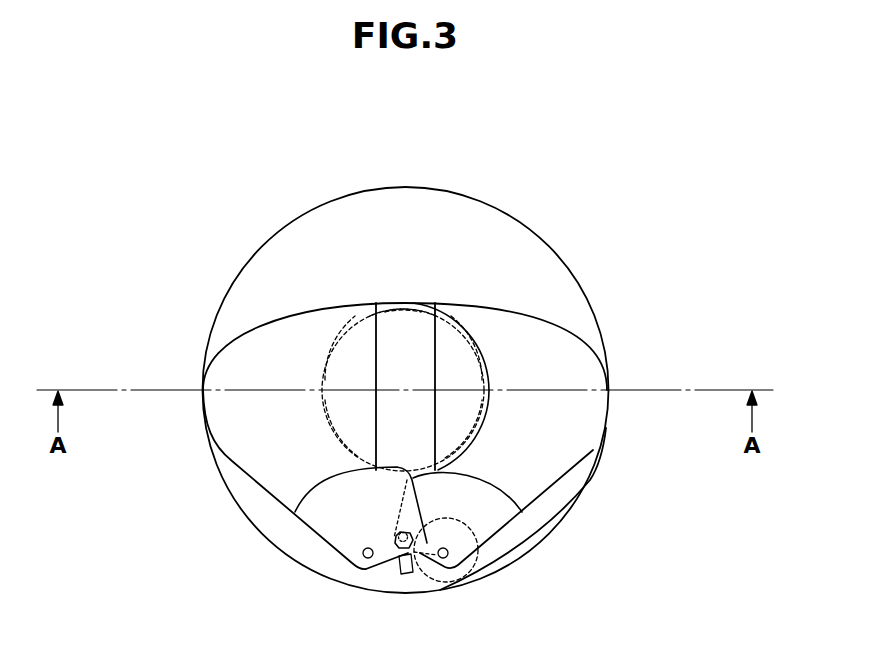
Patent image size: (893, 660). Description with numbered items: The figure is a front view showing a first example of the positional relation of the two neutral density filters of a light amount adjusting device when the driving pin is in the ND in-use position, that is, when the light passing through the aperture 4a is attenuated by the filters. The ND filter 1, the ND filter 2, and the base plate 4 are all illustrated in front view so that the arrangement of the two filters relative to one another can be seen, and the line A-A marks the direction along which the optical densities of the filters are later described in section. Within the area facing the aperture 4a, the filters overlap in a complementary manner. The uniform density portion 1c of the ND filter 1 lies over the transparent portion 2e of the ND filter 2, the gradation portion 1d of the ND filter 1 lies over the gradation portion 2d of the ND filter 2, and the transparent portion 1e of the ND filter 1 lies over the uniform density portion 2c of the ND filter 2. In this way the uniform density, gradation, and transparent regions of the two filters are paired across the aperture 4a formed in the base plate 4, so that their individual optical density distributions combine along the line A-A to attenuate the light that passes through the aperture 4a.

The ND filter 1 is at (277, 317).
The uniform density portion 1c is at (458, 350).
The gradation portion 1d is at (398, 333).
The transparent portion 1e is at (362, 350).
The ND filter 2 is at (548, 490).
The uniform density portion 2c is at (355, 418).
The gradation portion 2d is at (403, 443).
The transparent portion 2e is at (455, 423).
The base plate 4 is at (522, 221).
The aperture 4a is at (432, 312).